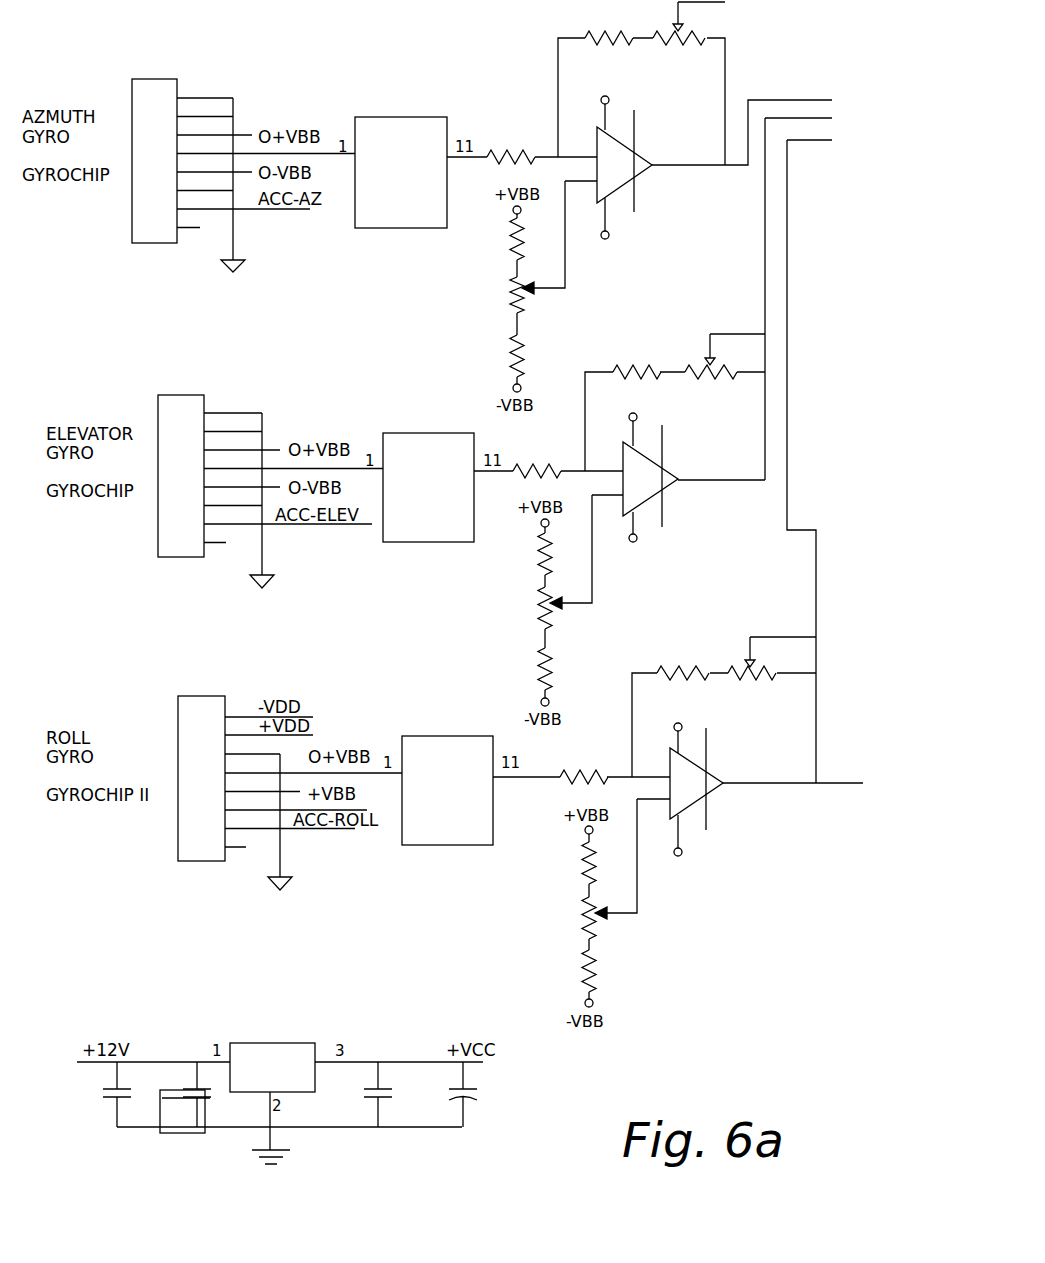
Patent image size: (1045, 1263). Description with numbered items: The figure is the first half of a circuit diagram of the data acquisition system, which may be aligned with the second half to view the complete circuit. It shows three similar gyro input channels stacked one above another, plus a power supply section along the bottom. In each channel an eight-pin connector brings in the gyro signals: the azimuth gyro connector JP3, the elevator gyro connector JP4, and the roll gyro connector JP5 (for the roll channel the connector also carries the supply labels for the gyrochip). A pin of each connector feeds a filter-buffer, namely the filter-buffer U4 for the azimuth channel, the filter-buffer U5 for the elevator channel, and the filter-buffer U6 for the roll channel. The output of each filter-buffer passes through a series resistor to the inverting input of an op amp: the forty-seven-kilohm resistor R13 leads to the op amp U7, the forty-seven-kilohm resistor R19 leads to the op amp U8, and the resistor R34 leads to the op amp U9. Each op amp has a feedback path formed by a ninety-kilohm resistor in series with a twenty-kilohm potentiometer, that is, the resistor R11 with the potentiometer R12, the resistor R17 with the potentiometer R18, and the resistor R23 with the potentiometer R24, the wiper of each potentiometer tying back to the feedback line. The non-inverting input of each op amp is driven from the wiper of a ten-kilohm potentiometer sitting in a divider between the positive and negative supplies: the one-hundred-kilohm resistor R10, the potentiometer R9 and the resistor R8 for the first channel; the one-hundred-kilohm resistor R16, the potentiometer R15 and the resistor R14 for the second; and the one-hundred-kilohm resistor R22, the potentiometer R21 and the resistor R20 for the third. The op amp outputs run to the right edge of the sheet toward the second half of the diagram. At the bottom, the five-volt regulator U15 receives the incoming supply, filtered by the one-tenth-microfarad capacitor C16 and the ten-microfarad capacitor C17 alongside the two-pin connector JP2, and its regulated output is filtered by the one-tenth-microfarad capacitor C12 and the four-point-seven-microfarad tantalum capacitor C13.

The 8 pin connector JP3 is at (243, 161).
The 8 pin connector JP4 is at (270, 478).
The 8 pin connector JP5 is at (290, 779).
The 2 pin connector JP2 is at (185, 1103).
The filter-buffer U4 is at (395, 117).
The filter-buffer U5 is at (423, 433).
The filter-buffer U6 is at (443, 736).
The op amp U7 is at (698, 170).
The op amp U8 is at (678, 480).
The op amp U9 is at (750, 793).
The 5V regulator U15 is at (283, 1043).
The resistor R8 is at (539, 355).
The 10K pot R9 is at (511, 288).
The 100K resistor R10 is at (492, 241).
The 90K resistor R11 is at (609, 34).
The 20K pot R12 is at (679, 59).
The 47K resistor R13 is at (511, 154).
The resistor R14 is at (567, 668).
The 10K pot R15 is at (521, 609).
The 100K resistor R16 is at (520, 558).
The 90K resistor R17 is at (637, 368).
The 20K pot R18 is at (711, 391).
The 47K resistor R19 is at (537, 467).
The resistor R20 is at (611, 970).
The 10K pot R21 is at (565, 918).
The 100K resistor R22 is at (610, 876).
The 90K resistor R23 is at (683, 673).
The 20K pot R24 is at (752, 692).
The resistor R34 is at (584, 773).
The 0.1 μF capacitor C12 is at (356, 1094).
The 4.7 μF tantalum capacitor C13 is at (436, 1094).
The 0.1 μF capacitor C16 is at (93, 1094).
The 10 μF capacitor C17 is at (173, 1094).